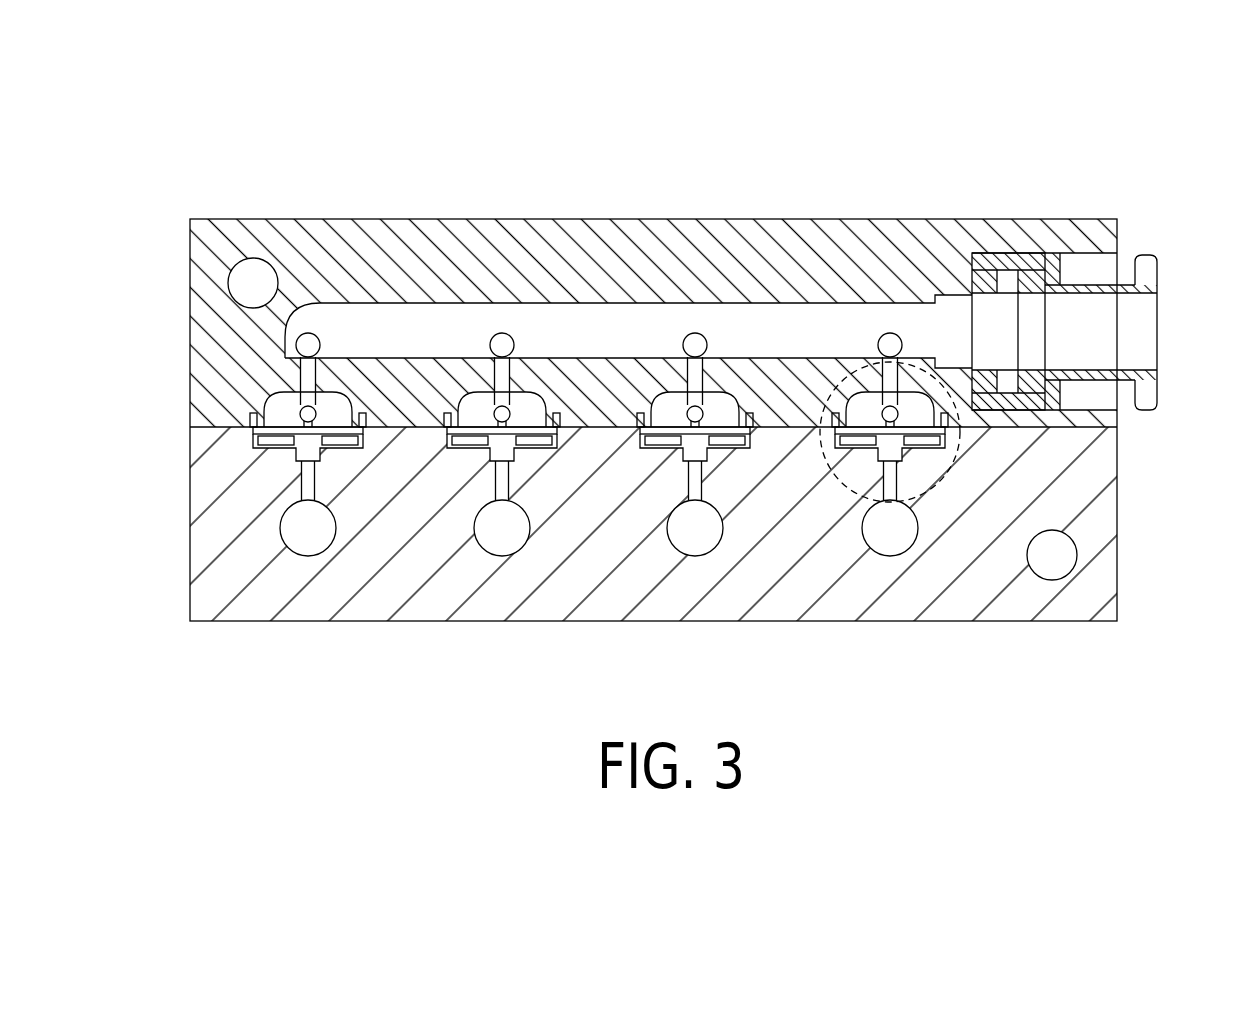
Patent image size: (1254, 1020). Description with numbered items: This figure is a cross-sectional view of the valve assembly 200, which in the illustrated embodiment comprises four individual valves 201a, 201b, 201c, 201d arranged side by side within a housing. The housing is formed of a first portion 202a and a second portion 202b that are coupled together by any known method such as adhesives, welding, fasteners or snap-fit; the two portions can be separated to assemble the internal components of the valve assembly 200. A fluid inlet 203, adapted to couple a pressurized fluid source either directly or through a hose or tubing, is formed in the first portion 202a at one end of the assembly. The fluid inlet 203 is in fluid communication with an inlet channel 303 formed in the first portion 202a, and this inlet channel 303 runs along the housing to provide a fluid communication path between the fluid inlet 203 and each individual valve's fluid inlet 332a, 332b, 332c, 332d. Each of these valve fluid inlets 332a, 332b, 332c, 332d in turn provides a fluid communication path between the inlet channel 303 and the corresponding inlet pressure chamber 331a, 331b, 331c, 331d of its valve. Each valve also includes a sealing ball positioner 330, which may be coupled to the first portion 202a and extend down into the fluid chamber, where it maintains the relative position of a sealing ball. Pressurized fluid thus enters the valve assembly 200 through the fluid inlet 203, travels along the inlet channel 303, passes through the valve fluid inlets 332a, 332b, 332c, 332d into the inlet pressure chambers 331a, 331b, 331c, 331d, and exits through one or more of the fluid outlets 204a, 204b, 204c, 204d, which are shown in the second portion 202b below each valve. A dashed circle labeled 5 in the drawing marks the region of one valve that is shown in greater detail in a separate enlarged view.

The valve assembly 200 is at (1185, 176).
The first portion 202a is at (914, 219).
The second portion 202b is at (1117, 600).
The fluid inlet 203 is at (1142, 258).
The inlet channel 303 is at (598, 310).
The sealing ball positioner 330 is at (239, 408).
The inlet pressure chamber 331a is at (945, 304).
The inlet pressure chamber 331b is at (738, 302).
The inlet pressure chamber 331c is at (475, 302).
The inlet pressure chamber 331d is at (214, 422).
The fluid inlet 332a is at (867, 296).
The fluid inlet 332b is at (670, 299).
The fluid inlet 332c is at (542, 299).
The fluid inlet 332d is at (218, 369).
The valve 201a is at (869, 526).
The valve 201b is at (671, 526).
The valve 201c is at (477, 526).
The valve 201d is at (239, 437).
The fluid outlet 204a is at (889, 569).
The fluid outlet 204b is at (694, 569).
The fluid outlet 204c is at (497, 568).
The fluid outlet 204d is at (299, 567).
The detail region of FIG. 5 is at (940, 482).